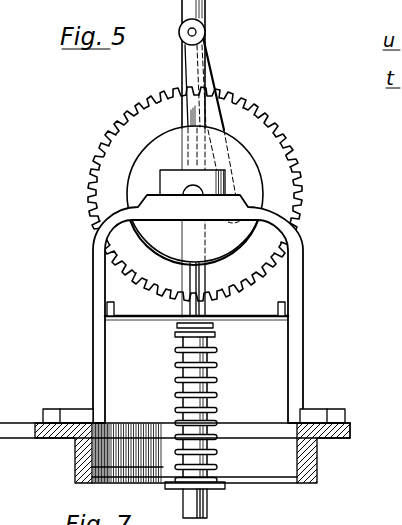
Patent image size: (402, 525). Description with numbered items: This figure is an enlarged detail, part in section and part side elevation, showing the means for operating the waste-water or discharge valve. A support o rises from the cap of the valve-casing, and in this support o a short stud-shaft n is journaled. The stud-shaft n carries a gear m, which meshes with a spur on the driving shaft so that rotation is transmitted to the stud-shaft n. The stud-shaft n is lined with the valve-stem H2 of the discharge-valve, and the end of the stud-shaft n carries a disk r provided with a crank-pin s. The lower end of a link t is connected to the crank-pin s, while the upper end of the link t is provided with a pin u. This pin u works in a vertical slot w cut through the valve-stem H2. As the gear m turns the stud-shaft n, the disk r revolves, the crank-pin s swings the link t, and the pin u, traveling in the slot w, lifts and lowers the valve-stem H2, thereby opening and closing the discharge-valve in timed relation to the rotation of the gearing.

The gear m is at (282, 170).
The vertical slot w is at (188, 112).
The disk r is at (194, 242).
The crank-pin s is at (254, 270).
The short stud-shaft n is at (188, 198).
The support o is at (93, 353).
The link t is at (212, 75).
The valve-stem H2 is at (182, 68).
The pin u is at (199, 31).